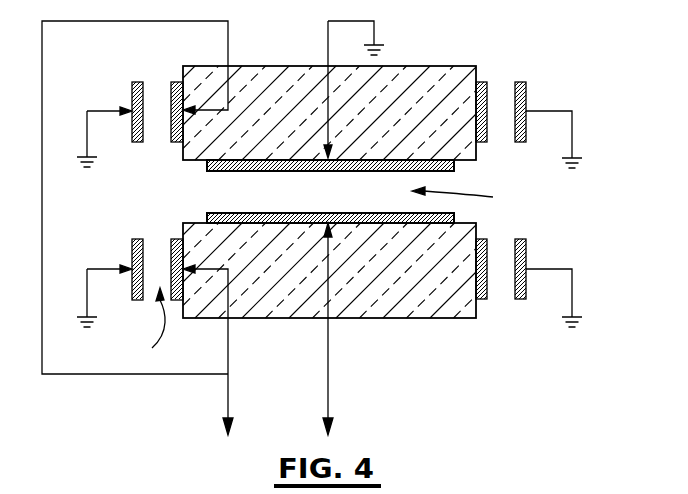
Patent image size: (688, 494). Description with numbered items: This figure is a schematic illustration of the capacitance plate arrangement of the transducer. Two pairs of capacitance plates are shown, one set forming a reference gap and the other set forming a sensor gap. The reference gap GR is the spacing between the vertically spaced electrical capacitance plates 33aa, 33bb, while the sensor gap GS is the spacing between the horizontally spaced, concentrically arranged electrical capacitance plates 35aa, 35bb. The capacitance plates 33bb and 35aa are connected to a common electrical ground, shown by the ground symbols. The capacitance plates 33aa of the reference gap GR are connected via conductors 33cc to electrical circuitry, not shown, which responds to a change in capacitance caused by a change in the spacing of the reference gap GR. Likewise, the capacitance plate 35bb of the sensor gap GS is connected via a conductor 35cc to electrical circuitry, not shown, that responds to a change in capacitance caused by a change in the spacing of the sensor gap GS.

The capacitance plates 33aa is at (171, 82).
The capacitance plates 33bb is at (133, 82).
The conductors 33cc is at (127, 374).
The capacitance plate 35aa is at (453, 168).
The capacitance plate 35bb is at (453, 214).
The conductor 35cc is at (329, 383).
The sensor gap GS is at (466, 201).
The reference gap GR is at (142, 325).